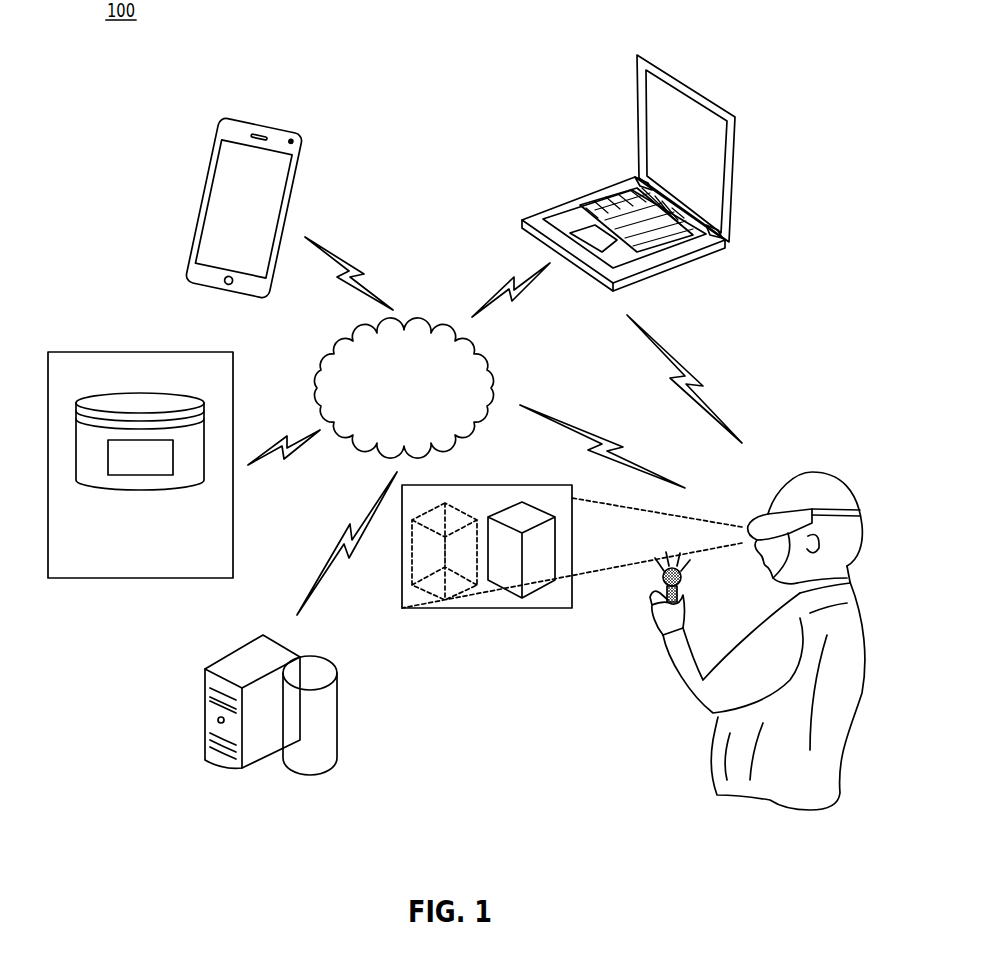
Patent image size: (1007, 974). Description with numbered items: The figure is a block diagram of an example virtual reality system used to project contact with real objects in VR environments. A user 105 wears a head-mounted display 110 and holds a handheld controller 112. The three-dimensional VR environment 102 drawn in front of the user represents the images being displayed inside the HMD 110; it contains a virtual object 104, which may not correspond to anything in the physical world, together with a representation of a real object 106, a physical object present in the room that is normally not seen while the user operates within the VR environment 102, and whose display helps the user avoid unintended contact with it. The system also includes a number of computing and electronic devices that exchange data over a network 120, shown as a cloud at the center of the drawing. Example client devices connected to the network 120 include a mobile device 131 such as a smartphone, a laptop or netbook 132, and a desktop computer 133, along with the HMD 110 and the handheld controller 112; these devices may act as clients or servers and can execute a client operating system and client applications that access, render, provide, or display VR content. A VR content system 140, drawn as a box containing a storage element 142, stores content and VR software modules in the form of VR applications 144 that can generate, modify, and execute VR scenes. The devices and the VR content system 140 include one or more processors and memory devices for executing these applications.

The VR environment 102 is at (466, 577).
The virtual object 104 is at (505, 578).
The real object 106 is at (435, 577).
The user 105 is at (707, 788).
The head-mounted display 110 is at (795, 518).
The handheld controller 112 is at (652, 588).
The network 120 is at (422, 410).
The mobile device 131 is at (285, 123).
The laptop or netbook 132 is at (549, 212).
The desktop computer 133 is at (242, 660).
The VR content system 140 is at (98, 378).
The content database 142 is at (162, 398).
The VR applications 144 is at (124, 466).